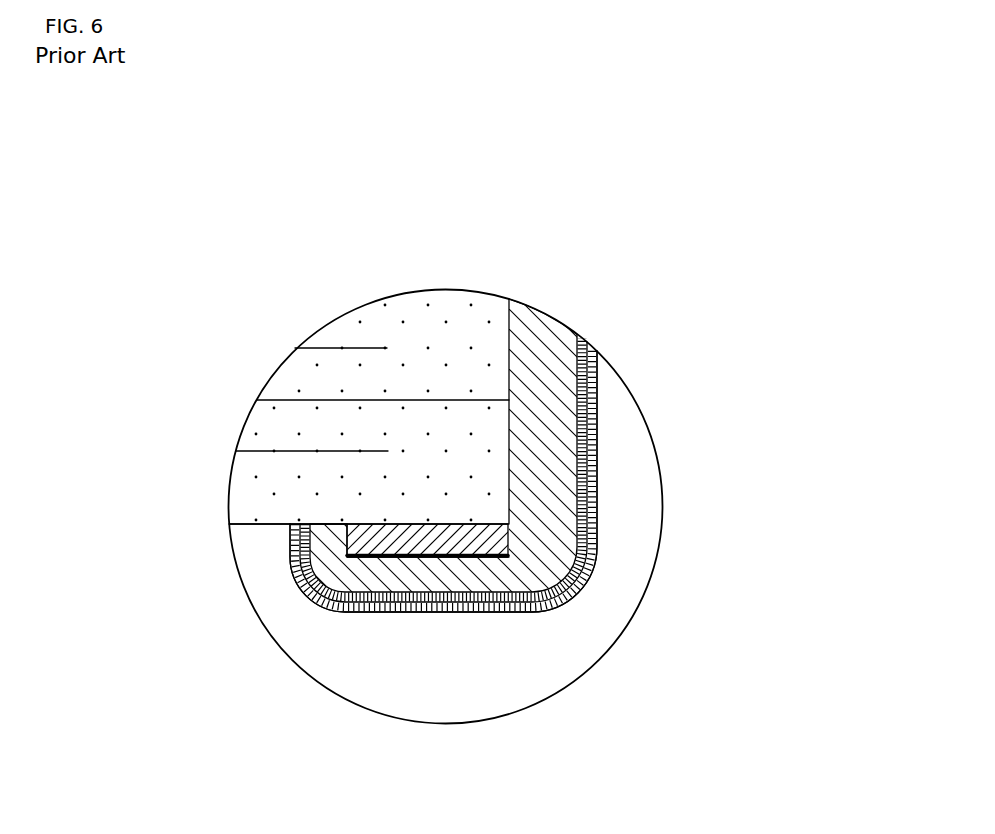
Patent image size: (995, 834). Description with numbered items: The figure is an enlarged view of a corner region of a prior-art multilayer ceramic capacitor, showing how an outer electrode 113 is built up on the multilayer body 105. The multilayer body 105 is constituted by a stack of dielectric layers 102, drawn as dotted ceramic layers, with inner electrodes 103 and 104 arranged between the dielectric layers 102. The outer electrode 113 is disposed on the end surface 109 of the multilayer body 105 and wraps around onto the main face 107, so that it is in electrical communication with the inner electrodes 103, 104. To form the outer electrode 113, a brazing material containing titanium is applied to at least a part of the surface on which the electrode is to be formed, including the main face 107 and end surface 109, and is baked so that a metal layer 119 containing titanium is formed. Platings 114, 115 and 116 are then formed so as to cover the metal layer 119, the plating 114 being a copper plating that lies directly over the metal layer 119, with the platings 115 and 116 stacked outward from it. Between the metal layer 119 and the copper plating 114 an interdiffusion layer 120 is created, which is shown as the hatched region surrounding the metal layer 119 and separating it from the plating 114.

The dielectric layers 102 is at (348, 318).
The inner electrode 103 is at (263, 450).
The inner electrode 104 is at (428, 400).
The multilayer body 105 is at (268, 527).
The main face 107 is at (232, 538).
The end surface 109 is at (510, 323).
The outer electrode 113 is at (500, 616).
The plating 114 is at (565, 590).
The plating 115 is at (577, 575).
The plating 116 is at (597, 553).
The metal layer 119 is at (512, 540).
The interdiffusion layer 120 is at (427, 560).